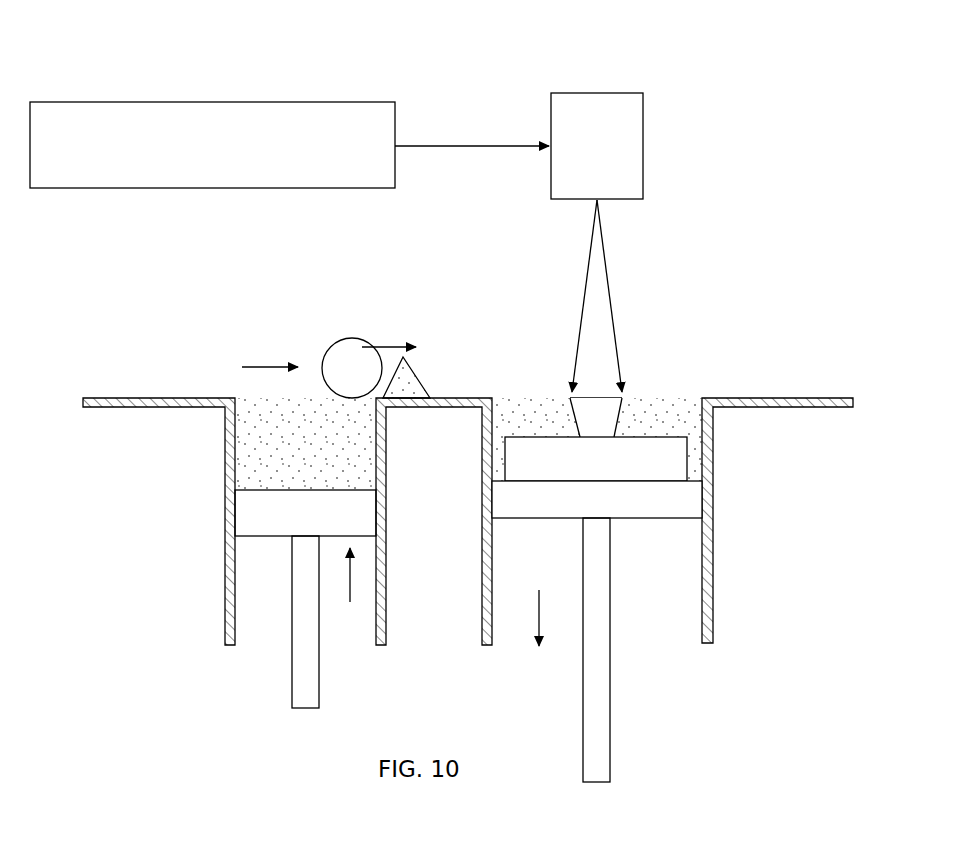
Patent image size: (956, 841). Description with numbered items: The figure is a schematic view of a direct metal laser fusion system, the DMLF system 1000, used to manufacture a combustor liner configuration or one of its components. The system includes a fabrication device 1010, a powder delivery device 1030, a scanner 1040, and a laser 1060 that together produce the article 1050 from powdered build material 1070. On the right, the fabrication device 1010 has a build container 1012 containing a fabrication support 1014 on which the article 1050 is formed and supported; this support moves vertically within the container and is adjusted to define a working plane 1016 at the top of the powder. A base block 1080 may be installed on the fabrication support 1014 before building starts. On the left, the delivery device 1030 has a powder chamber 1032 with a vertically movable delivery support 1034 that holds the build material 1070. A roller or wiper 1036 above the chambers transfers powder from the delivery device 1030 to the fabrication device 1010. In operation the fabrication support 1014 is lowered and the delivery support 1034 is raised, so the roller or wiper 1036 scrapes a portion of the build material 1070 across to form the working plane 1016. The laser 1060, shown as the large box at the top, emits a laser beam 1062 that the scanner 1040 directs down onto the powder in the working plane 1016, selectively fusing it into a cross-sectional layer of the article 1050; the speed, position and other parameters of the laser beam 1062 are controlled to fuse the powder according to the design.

The DMLF system 1000 is at (762, 110).
The fabrication device 1010 is at (667, 552).
The build container 1012 is at (708, 425).
The fabrication support 1014 is at (658, 518).
The working plane 1016 is at (683, 403).
The powder delivery device 1030 is at (261, 497).
The powder chamber 1032 is at (228, 455).
The delivery support 1034 is at (245, 512).
The roller or wiper 1036 is at (352, 338).
The scanner 1040 is at (598, 93).
The article 1050 is at (556, 398).
The laser 1060 is at (220, 102).
The laser beam 1062 is at (475, 146).
The build material 1070 is at (243, 435).
The base block 1080 is at (543, 470).